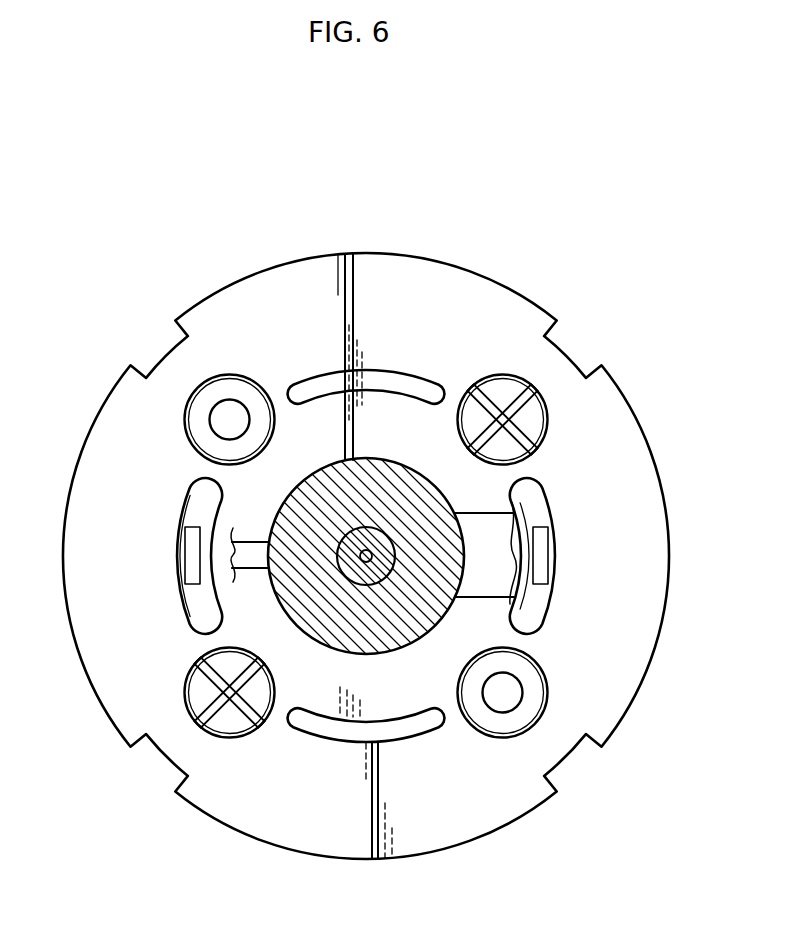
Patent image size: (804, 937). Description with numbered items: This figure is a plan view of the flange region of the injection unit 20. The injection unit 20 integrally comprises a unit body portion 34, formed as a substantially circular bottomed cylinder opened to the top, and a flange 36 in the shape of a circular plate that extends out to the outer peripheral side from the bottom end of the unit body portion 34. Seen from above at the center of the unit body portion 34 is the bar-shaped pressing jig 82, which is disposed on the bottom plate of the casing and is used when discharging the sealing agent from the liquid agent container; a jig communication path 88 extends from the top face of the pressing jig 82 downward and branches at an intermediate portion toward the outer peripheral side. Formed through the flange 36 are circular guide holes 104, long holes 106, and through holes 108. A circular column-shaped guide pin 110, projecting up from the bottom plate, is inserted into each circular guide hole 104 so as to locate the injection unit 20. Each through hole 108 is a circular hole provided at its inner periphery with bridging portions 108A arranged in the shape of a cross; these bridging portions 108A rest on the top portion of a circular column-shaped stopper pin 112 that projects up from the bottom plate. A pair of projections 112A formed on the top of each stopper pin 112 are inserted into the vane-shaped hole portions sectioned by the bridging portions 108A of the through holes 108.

The injection unit 20 is at (488, 277).
The flange 36 is at (371, 253).
The unit body portion 34 is at (346, 459).
The pressing jig 82 is at (371, 584).
The jig communication path 88 is at (376, 560).
The circular guide hole 104 is at (229, 376).
The guide pin 110 is at (250, 400).
The long hole 106 is at (190, 497).
The through hole 108 is at (500, 377).
The bridging portion 108A is at (522, 450).
The stopper pin 112 is at (477, 383).
The projection 112A is at (533, 418).